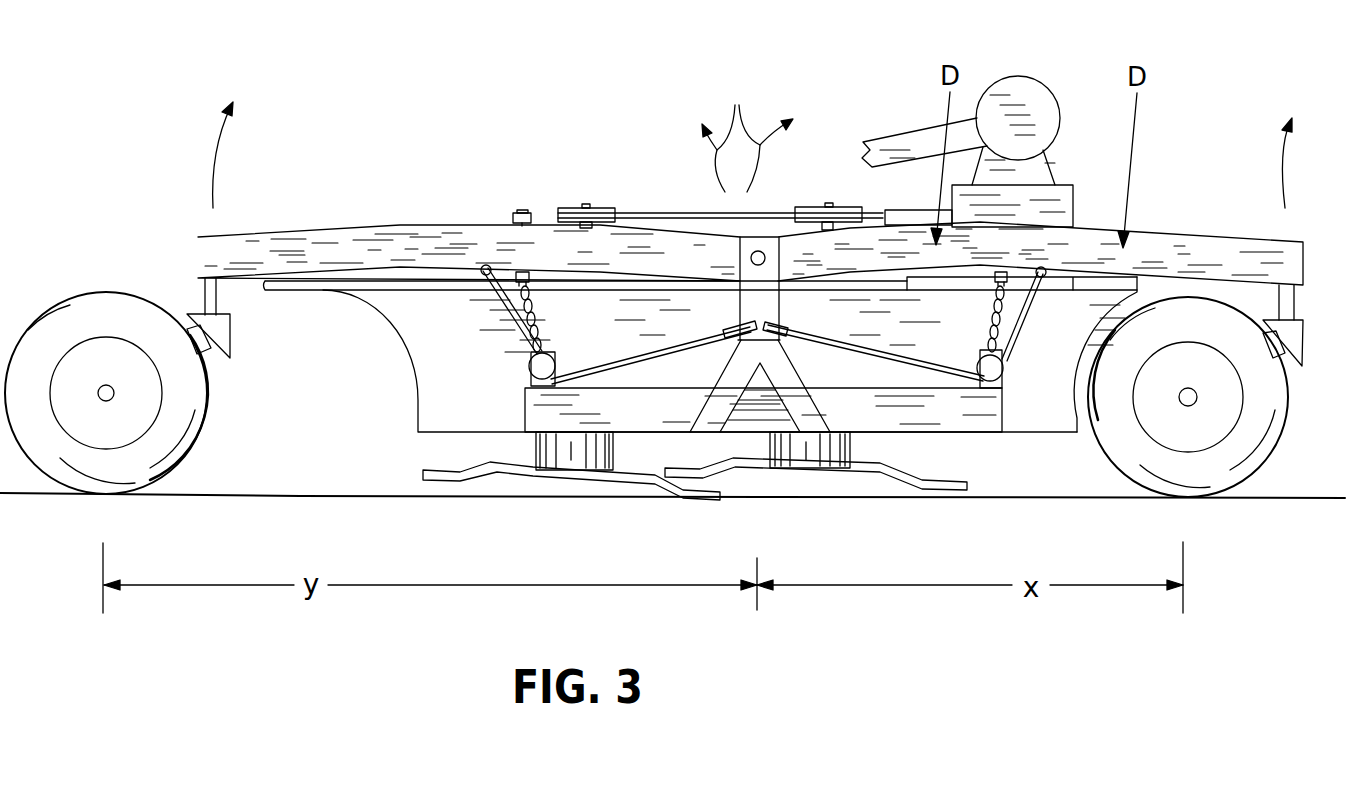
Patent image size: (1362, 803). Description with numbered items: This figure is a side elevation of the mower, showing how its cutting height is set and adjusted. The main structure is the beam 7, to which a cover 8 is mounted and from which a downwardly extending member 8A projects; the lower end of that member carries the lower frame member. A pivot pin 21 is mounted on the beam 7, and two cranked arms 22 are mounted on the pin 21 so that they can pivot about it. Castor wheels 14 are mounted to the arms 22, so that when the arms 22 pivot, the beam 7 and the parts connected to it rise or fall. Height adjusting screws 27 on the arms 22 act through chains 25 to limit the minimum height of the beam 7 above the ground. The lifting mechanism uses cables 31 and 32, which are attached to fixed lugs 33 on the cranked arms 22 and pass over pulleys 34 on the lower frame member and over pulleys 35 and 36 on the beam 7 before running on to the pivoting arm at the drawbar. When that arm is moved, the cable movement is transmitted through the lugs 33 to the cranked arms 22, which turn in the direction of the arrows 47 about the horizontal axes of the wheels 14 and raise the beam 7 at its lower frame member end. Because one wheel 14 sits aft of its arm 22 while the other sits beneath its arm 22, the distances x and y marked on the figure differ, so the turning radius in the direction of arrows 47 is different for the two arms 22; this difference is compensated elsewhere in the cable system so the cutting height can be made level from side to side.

The beam 7 is at (958, 423).
The cover 8 is at (446, 343).
The downwardly extending member 8A is at (745, 295).
The castor wheels 14 is at (87, 307).
The pivot pin 21 is at (764, 255).
The cranked arms 22 is at (355, 237).
The chains 25 is at (543, 312).
The height adjusting screws 27 is at (527, 212).
The cable 31 is at (890, 363).
The cable 32 is at (654, 350).
The fixed lugs 33 is at (478, 275).
The pulleys 34 is at (530, 367).
The pulley 35 is at (727, 353).
The pulley 36 is at (790, 328).
The arrows 47 is at (747, 132).